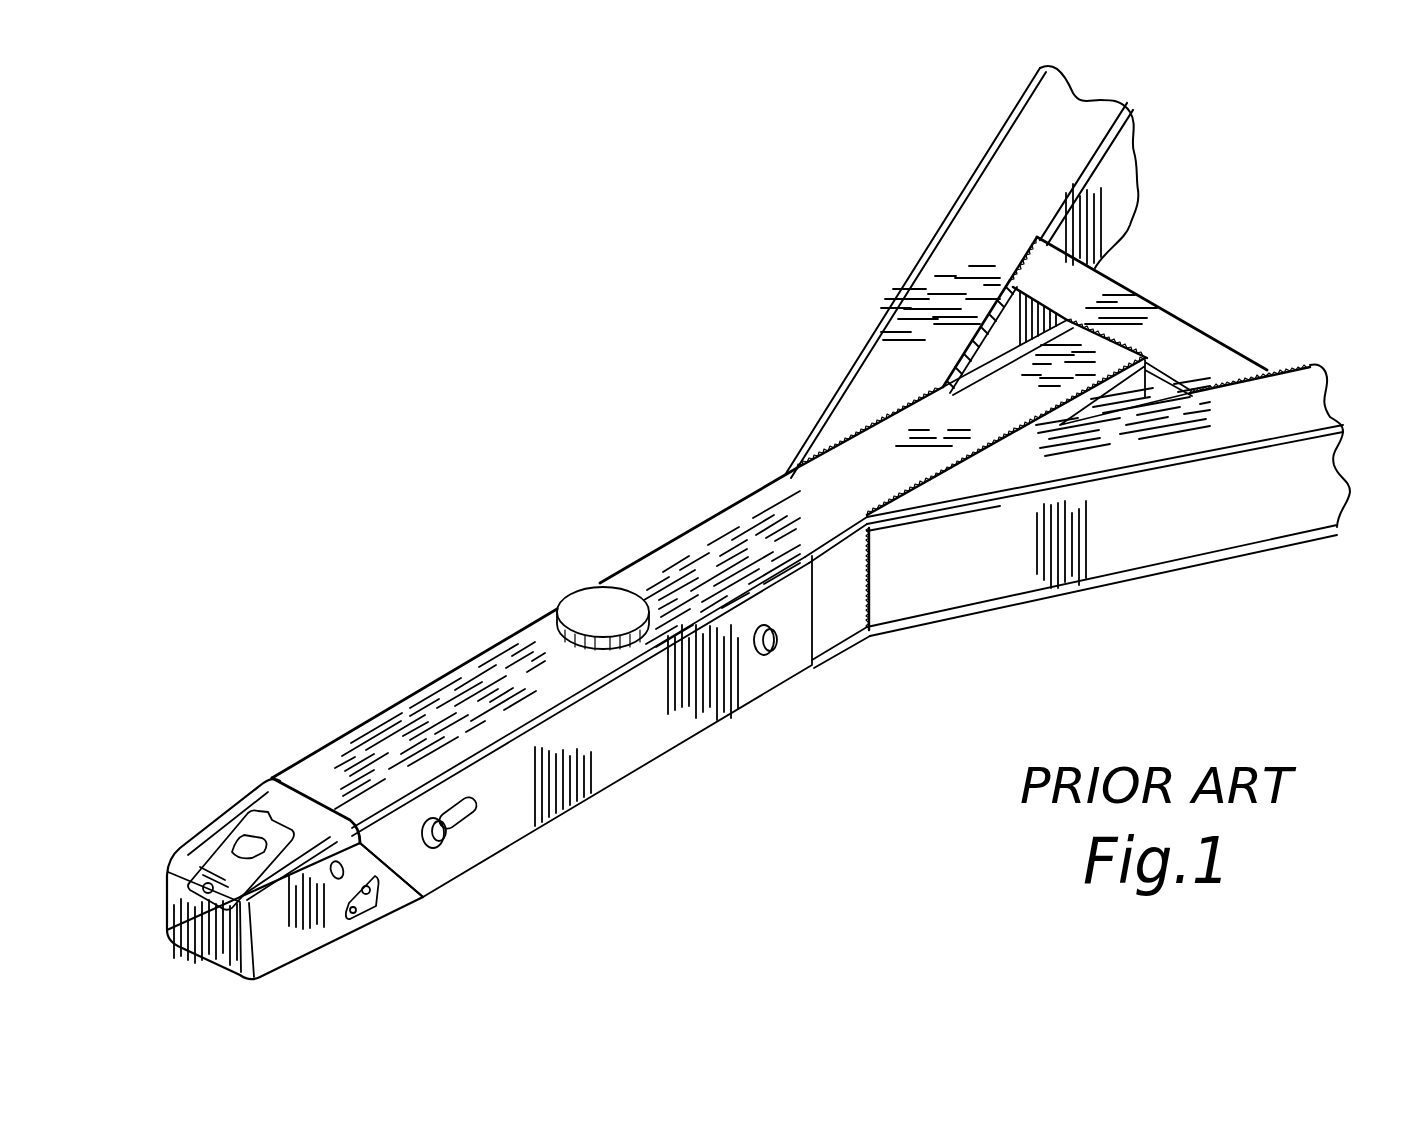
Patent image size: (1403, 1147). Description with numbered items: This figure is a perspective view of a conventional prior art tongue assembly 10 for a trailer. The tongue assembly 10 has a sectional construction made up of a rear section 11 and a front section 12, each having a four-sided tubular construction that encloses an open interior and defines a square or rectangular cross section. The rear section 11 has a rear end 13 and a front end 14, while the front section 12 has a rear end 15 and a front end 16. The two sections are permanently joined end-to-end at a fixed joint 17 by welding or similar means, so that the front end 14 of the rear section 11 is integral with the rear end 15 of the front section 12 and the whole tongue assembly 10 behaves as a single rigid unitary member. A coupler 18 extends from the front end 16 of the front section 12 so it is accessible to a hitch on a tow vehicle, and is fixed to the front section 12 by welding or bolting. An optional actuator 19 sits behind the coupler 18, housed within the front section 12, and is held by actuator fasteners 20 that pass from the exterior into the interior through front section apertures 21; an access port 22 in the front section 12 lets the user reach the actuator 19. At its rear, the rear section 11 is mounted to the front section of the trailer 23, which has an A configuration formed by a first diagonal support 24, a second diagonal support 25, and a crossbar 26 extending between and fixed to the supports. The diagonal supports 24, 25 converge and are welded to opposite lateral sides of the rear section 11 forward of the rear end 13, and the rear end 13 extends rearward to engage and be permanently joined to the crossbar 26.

The tongue assembly 10 is at (806, 826).
The rear section 11 is at (877, 463).
The front section 12 is at (395, 735).
The rear end 13 is at (1063, 350).
The front end 14 is at (773, 515).
The rear end 15 is at (730, 543).
The front end 16 is at (325, 790).
The fixed joint 17 is at (812, 627).
The coupler 18 is at (262, 800).
The actuator 19 is at (472, 818).
The actuator fasteners 20 is at (440, 845).
The front section apertures 21 is at (460, 827).
The access port 22 is at (588, 612).
The front section of the trailer 23 is at (910, 267).
The first diagonal support 24 is at (1133, 523).
The second diagonal support 25 is at (998, 204).
The crossbar 26 is at (1180, 348).